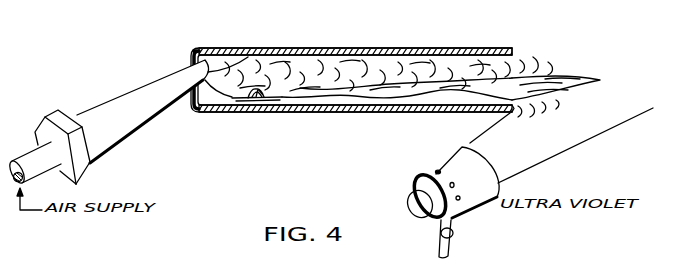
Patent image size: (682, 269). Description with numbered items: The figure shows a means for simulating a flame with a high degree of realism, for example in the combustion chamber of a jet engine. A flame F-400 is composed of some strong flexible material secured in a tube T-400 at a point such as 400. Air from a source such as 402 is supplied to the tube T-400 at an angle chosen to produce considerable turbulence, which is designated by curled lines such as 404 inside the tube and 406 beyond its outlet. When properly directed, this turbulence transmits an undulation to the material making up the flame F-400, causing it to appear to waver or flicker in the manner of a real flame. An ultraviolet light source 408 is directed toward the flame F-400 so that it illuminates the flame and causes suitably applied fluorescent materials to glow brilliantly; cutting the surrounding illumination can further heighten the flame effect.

The tube T-400 is at (282, 37).
The air source 402 is at (147, 113).
The turbulence 404 is at (343, 67).
The securing point 400 is at (252, 104).
The turbulence 406 is at (538, 67).
The flame F-400 is at (562, 78).
The ultraviolet light source 408 is at (457, 160).